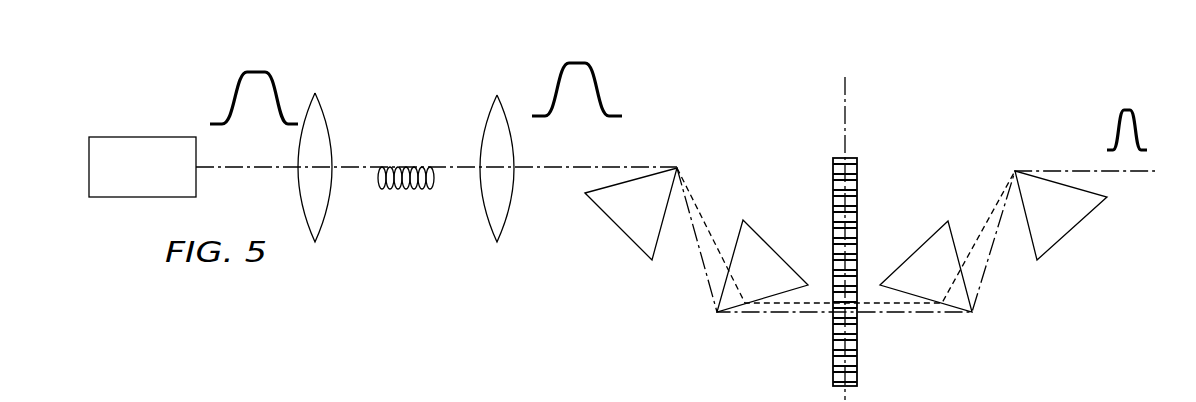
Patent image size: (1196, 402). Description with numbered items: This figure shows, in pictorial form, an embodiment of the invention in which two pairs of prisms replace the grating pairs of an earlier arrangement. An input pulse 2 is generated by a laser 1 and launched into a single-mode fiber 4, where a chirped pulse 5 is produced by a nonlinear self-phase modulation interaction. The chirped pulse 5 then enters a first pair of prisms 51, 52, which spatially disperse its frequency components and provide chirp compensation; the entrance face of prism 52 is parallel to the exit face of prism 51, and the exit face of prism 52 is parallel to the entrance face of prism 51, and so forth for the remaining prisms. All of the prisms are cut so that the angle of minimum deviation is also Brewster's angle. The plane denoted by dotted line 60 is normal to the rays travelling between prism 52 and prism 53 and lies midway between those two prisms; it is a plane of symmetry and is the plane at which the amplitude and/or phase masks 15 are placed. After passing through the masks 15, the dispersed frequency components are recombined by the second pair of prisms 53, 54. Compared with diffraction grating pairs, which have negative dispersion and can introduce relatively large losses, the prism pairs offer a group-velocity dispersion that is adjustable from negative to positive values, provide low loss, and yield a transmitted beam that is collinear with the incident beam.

The laser 1 is at (176, 137).
The input pulse 2 is at (238, 90).
The single-mode fiber 4 is at (404, 190).
The chirped pulse 5 is at (561, 85).
The amplitude and/or phase masks 15 is at (832, 350).
The prism 51 is at (606, 210).
The prism 52 is at (764, 236).
The prism 53 is at (924, 243).
The prism 54 is at (1077, 227).
The plane of symmetry (dotted line) 60 is at (847, 100).